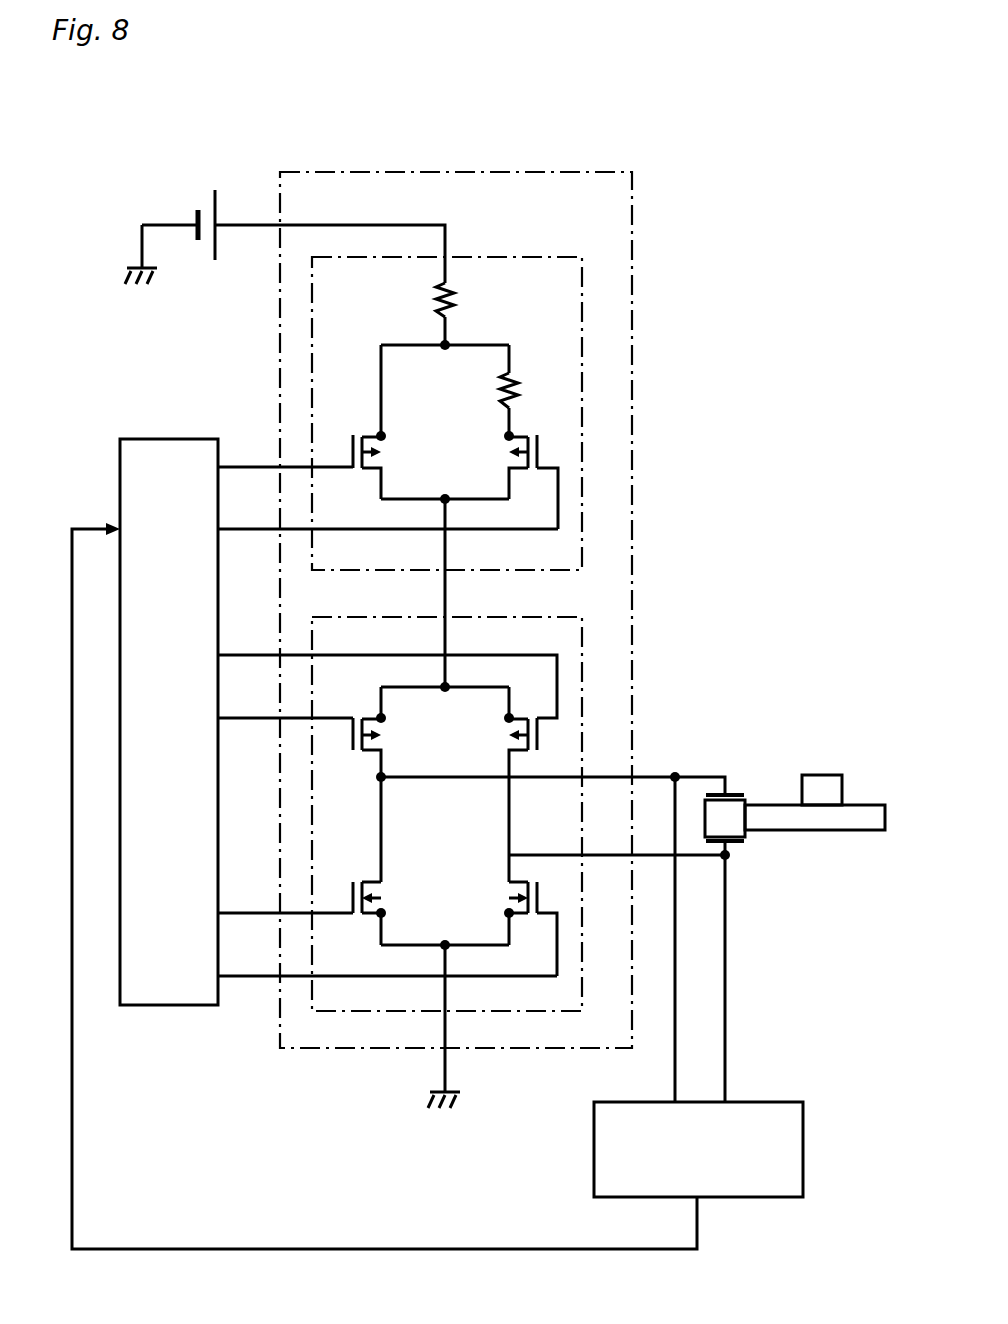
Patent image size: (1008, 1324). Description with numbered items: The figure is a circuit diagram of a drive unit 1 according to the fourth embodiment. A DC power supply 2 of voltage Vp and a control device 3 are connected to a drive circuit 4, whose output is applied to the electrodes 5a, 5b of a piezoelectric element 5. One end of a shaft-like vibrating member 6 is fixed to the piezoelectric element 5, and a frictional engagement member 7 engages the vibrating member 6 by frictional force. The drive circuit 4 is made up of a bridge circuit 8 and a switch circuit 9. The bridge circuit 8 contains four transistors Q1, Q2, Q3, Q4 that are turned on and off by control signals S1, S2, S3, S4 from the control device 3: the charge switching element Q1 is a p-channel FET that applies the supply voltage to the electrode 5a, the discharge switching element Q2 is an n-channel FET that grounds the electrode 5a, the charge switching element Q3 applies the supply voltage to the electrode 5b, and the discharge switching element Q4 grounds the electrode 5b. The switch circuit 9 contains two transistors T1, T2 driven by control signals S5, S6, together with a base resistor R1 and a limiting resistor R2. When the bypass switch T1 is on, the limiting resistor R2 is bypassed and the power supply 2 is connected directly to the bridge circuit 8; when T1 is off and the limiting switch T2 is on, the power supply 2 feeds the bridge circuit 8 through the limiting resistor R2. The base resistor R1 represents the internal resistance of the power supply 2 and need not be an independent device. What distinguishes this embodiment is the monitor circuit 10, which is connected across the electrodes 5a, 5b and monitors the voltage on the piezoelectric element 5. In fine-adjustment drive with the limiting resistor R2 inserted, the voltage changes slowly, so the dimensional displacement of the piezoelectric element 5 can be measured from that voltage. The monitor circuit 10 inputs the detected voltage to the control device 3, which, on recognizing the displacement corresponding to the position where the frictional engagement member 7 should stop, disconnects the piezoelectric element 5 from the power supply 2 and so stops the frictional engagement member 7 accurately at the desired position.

The drive unit 1 is at (426, 158).
The DC power supply 2 is at (215, 188).
The control device 3 is at (173, 1006).
The drive circuit 4 is at (640, 388).
The piezoelectric element 5 is at (746, 814).
The electrode 5a is at (740, 792).
The electrode 5b is at (735, 844).
The vibrating member 6 is at (816, 832).
The frictional engagement member 7 is at (826, 774).
The bridge circuit 8 is at (542, 614).
The switch circuit 9 is at (542, 254).
The monitor circuit 10 is at (790, 1101).
The base resistor R1 is at (456, 292).
The limiting resistor R2 is at (500, 394).
The bypass switch transistor T1 is at (364, 434).
The limiting switch transistor T2 is at (512, 452).
The charge switching element Q1 is at (363, 752).
The discharge switching element Q2 is at (363, 880).
The charge switching element Q3 is at (512, 732).
The discharge switching element Q4 is at (512, 895).
The control signal S1 is at (285, 700).
The control signal S2 is at (285, 895).
The control signal S3 is at (387, 669).
The control signal S4 is at (387, 958).
The control signal S5 is at (285, 449).
The control signal S6 is at (388, 511).